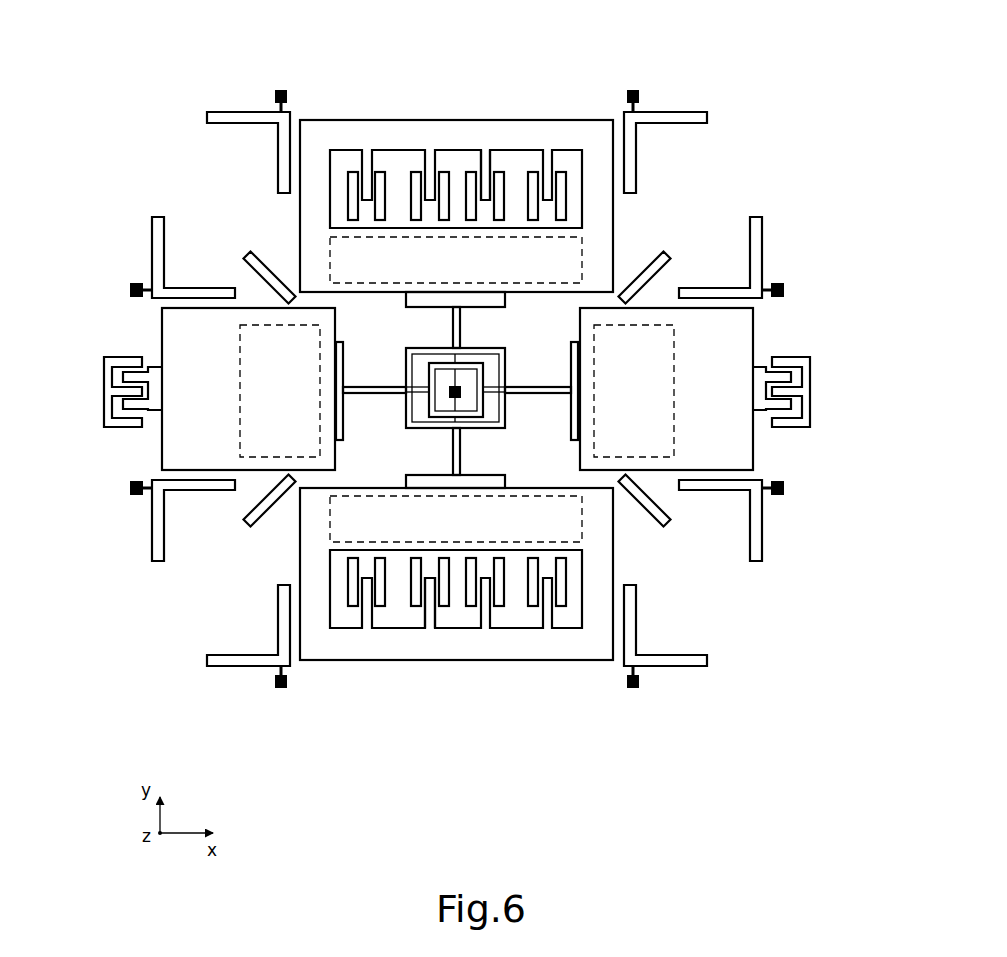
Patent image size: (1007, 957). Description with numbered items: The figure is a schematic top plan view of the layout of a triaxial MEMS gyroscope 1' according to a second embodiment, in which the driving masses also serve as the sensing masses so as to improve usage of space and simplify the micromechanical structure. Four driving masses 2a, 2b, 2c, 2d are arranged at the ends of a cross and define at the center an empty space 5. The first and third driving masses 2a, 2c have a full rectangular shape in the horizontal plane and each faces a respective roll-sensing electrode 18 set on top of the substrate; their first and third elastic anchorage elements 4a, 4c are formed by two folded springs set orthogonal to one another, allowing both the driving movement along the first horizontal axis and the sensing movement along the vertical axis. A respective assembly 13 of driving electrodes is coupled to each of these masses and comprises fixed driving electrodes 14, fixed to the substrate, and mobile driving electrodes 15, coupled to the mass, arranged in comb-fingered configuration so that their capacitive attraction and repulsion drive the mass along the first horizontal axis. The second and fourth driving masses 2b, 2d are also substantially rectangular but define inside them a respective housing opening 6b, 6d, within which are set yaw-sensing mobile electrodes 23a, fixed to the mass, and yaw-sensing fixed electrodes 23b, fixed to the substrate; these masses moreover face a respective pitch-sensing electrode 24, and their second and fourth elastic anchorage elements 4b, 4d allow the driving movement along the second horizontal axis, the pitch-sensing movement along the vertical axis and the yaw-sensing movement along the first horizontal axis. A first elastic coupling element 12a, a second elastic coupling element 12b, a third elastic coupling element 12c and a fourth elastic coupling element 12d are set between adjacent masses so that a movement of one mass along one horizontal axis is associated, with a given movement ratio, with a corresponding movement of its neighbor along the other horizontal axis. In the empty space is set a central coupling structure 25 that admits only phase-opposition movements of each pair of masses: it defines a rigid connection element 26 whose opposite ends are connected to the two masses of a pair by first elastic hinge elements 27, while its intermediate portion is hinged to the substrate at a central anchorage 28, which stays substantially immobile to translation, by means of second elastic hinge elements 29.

The MEMS gyroscope 1' is at (461, 382).
The first driving mass 2a is at (737, 325).
The second driving mass 2b is at (606, 221).
The third driving mass 2c is at (170, 450).
The fourth driving mass 2d is at (555, 650).
The first elastic anchorage element 4a is at (767, 237).
The second elastic anchorage element 4b is at (670, 111).
The third elastic anchorage element 4c is at (157, 531).
The fourth elastic anchorage element 4d is at (662, 673).
The empty space 5 is at (457, 390).
The housing opening 6b is at (355, 157).
The housing opening 6d is at (403, 623).
The first elastic coupling element 12a is at (670, 262).
The second elastic coupling element 12b is at (245, 250).
The third elastic coupling element 12c is at (287, 502).
The fourth elastic coupling element 12d is at (647, 518).
The assembly of driving electrodes 13 is at (461, 373).
The fixed driving electrodes 14 is at (120, 359).
The mobile driving electrodes 15 is at (146, 373).
The roll-sensing electrode 18 is at (250, 457).
The yaw-sensing mobile electrodes 23a is at (487, 160).
The yaw-sensing fixed electrodes 23b is at (465, 190).
The pitch-sensing electrode 24 is at (582, 240).
The central coupling structure 25 is at (515, 420).
The rigid connection element 26 is at (474, 345).
The first elastic hinge elements 27 is at (410, 313).
The central anchorage 28 is at (462, 392).
The second elastic hinge elements 29 is at (452, 395).